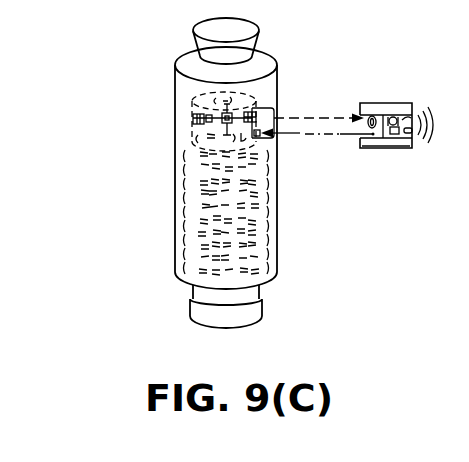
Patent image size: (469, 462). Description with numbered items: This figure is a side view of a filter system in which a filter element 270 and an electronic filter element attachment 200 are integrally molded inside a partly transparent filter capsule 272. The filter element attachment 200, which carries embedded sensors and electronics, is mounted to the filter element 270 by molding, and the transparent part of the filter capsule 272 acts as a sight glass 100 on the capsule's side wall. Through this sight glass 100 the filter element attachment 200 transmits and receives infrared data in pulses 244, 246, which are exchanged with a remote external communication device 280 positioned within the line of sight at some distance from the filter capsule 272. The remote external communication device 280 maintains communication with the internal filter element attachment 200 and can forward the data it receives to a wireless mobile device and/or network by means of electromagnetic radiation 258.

The sight glass 100 is at (270, 105).
The filter element attachment 200 is at (184, 94).
The infrared data pulse 244 is at (336, 88).
The infrared data pulse 246 is at (318, 150).
The electromagnetic radiation 258 is at (439, 150).
The filter element 270 is at (190, 230).
The filter capsule 272 is at (155, 161).
The remote external communication device 280 is at (390, 160).